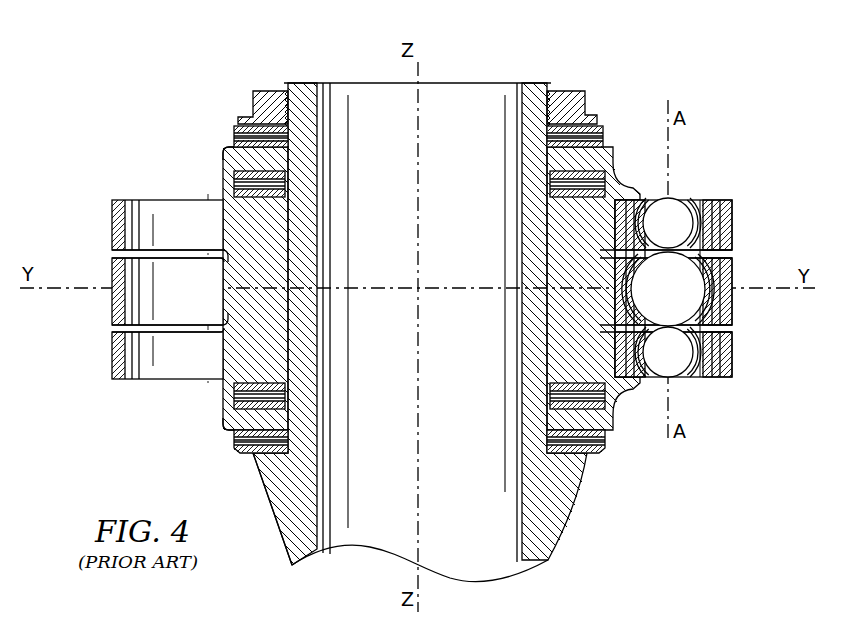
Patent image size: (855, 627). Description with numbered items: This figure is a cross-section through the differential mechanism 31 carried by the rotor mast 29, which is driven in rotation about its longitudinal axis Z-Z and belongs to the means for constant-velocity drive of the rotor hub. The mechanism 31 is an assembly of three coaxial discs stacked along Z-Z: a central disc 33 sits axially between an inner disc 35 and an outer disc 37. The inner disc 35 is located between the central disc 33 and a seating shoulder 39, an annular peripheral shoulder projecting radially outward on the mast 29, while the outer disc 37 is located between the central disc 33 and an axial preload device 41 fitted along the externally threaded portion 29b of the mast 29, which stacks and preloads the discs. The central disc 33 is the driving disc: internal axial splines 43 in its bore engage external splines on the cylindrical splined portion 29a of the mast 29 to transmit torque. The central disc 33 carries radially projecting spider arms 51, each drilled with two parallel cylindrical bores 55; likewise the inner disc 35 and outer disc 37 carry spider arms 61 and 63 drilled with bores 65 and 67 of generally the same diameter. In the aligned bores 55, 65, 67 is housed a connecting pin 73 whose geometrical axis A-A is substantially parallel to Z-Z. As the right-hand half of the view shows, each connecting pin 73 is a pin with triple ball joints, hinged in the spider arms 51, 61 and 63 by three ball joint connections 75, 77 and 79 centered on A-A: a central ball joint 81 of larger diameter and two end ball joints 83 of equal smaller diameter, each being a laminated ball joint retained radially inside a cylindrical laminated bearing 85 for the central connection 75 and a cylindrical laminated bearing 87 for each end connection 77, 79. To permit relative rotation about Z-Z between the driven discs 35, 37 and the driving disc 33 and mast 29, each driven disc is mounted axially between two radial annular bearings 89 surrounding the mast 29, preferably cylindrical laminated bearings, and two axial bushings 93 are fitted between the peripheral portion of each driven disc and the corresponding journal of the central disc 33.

The mast 29 is at (425, 309).
The cylindrical splined portion 29a is at (523, 238).
The externally threaded portion 29b is at (536, 82).
The differential mechanism 31 is at (162, 73).
The central disc 33 is at (426, 294).
The inner disc 35 is at (215, 429).
The outer disc 37 is at (212, 150).
The seating shoulder 39 is at (273, 512).
The axial preload device 41 is at (250, 99).
The internal axial splines 43 is at (290, 245).
The spider arms 51 is at (427, 290).
The cylindrical bores 55 is at (148, 278).
The spider arms 61 is at (421, 386).
The spider arms 63 is at (421, 199).
The bores 65 is at (147, 373).
The bores 67 is at (147, 200).
The connecting pin 73 is at (712, 284).
The ball joint connection 75 is at (721, 297).
The ball joint connection 77 is at (716, 380).
The ball joint connection 79 is at (708, 205).
The central ball joint 81 is at (690, 272).
The end ball joints 83 is at (661, 216).
The cylindrical laminated bearing 85 is at (730, 322).
The cylindrical laminated bearing 87 is at (734, 350).
The radial annular bearings 89 is at (600, 128).
The axial bushings 93 is at (238, 207).